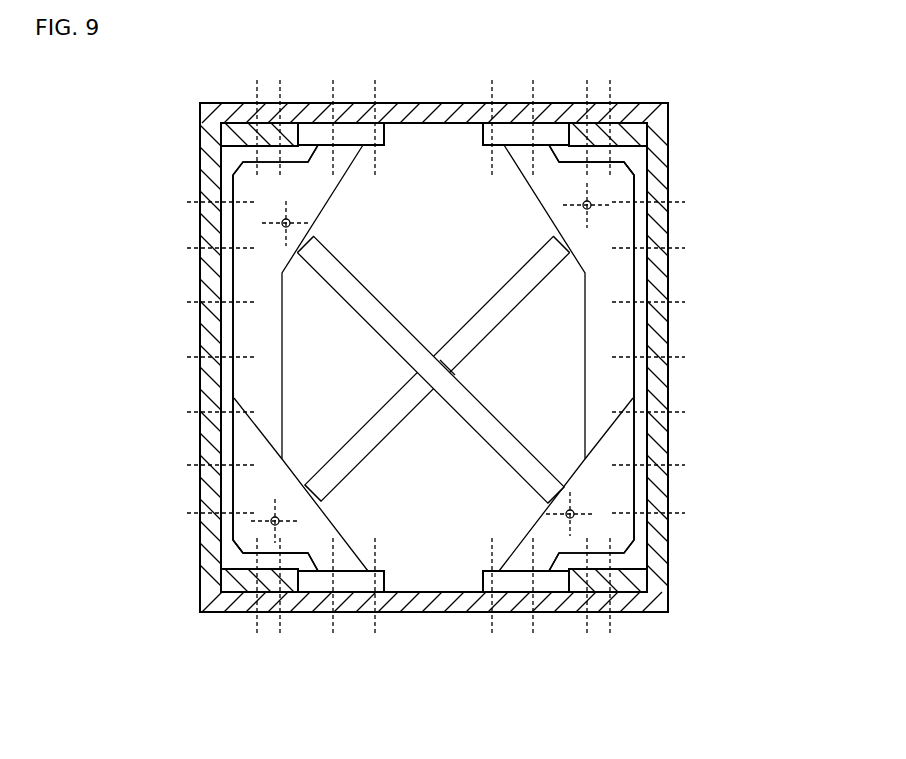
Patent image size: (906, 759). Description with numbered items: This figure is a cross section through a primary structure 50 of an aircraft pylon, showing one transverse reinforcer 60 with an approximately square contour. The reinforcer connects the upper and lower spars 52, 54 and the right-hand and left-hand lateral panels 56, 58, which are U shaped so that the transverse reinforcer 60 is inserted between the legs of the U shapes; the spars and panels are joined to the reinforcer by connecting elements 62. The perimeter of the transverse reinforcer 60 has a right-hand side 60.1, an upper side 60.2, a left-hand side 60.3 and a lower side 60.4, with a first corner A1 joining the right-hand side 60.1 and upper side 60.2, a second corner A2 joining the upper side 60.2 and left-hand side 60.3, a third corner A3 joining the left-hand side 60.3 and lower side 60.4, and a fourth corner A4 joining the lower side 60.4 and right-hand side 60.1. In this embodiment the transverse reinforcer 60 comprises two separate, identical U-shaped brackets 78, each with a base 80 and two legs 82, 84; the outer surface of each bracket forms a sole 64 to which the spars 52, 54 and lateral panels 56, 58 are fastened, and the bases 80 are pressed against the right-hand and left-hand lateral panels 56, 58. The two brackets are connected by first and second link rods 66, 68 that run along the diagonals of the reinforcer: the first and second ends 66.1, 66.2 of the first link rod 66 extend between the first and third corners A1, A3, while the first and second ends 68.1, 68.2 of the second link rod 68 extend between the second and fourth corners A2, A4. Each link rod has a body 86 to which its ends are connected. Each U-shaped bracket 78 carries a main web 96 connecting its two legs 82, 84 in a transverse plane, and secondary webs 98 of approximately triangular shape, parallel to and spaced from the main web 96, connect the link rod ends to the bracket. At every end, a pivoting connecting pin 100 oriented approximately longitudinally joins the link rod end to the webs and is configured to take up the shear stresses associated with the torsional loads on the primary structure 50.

The primary structure 50 is at (434, 349).
The upper spar 52 is at (450, 104).
The lower spar 54 is at (405, 613).
The right-hand lateral panel 56 is at (655, 350).
The left-hand lateral panel 58 is at (203, 340).
The transverse reinforcer 60 is at (307, 130).
The right-hand side 60.1 is at (647, 322).
The upper side 60.2 is at (515, 128).
The left-hand side 60.3 is at (231, 402).
The lower side 60.4 is at (312, 586).
The connecting element 62 is at (375, 102).
The sole 64 is at (389, 94).
The first link rod 66 is at (431, 362).
The first end of first link rod 66.1 is at (312, 233).
The second end of first link rod 66.2 is at (565, 486).
The second link rod 68 is at (538, 305).
The first end of second link rod 68.1 is at (555, 236).
The second end of second link rod 68.2 is at (321, 500).
The U-shaped bracket 78 is at (200, 316).
The base 80 is at (233, 378).
The leg 82 is at (273, 120).
The leg 84 is at (285, 584).
The body 86 is at (437, 330).
The main web 96 is at (250, 385).
The secondary web 98 is at (608, 226).
The pivoting connecting pin 100 is at (281, 222).
The first corner A1 is at (650, 150).
The second corner A2 is at (216, 149).
The third corner A3 is at (218, 567).
The fourth corner A4 is at (650, 566).